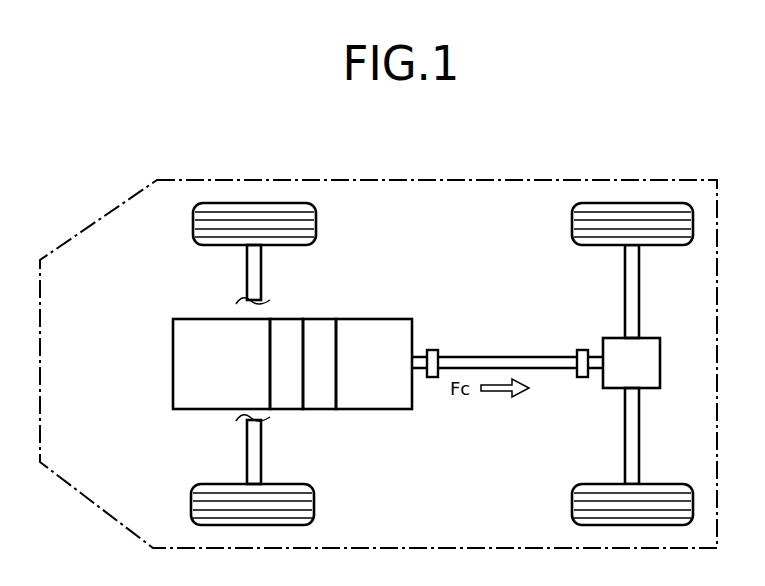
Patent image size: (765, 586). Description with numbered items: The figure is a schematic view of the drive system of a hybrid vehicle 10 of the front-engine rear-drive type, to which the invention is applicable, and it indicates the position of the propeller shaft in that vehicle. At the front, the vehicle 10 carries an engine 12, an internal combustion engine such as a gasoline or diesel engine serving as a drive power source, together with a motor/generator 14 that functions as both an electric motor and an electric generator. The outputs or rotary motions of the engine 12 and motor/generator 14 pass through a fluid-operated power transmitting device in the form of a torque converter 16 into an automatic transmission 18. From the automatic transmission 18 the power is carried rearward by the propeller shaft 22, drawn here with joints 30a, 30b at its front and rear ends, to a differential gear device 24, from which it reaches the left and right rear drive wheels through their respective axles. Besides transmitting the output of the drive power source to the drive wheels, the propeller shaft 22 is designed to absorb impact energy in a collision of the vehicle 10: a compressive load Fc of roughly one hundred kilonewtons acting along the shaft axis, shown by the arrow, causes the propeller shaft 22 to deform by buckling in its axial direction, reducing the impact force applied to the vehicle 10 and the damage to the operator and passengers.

The hybrid vehicle 10 is at (162, 151).
The engine 12 is at (222, 321).
The motor/generator 14 is at (284, 321).
The torque converter 16 is at (326, 321).
The automatic transmission 18 is at (382, 321).
The propeller shaft 22 is at (480, 356).
The differential gear device 24 is at (655, 338).
The universal joint 30a is at (432, 350).
The universal joint 30b is at (580, 350).